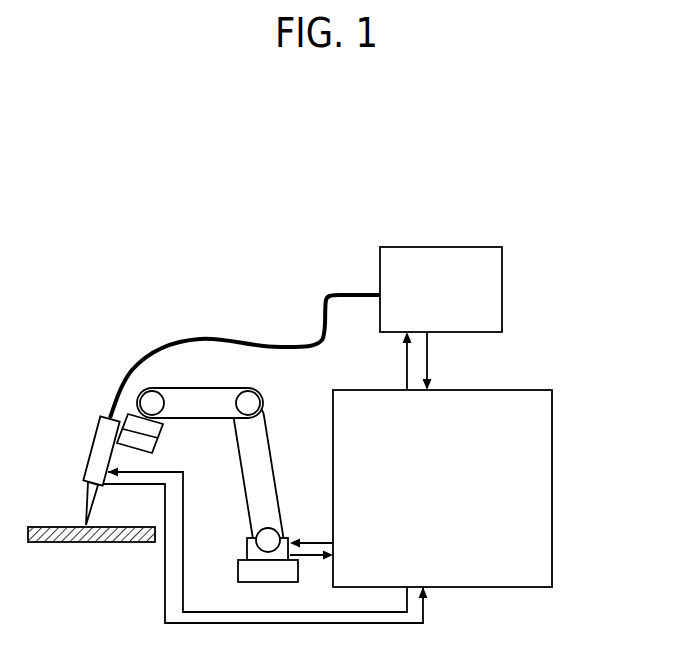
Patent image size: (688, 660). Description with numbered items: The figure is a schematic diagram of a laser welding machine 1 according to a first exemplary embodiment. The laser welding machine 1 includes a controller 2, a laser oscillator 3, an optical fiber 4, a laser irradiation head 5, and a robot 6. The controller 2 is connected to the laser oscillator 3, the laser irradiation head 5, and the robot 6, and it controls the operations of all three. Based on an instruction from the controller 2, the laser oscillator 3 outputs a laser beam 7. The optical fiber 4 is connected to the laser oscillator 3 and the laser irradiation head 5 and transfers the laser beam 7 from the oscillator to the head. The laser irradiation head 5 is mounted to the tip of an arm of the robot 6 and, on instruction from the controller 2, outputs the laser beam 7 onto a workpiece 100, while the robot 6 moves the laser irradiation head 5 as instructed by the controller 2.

The laser welding machine 1 is at (31, 260).
The controller 2 is at (552, 499).
The laser oscillator 3 is at (447, 245).
The optical fiber 4 is at (227, 337).
The laser irradiation head 5 is at (90, 446).
The robot 6 is at (188, 387).
The laser beam 7 is at (85, 503).
The workpiece 100 is at (43, 543).